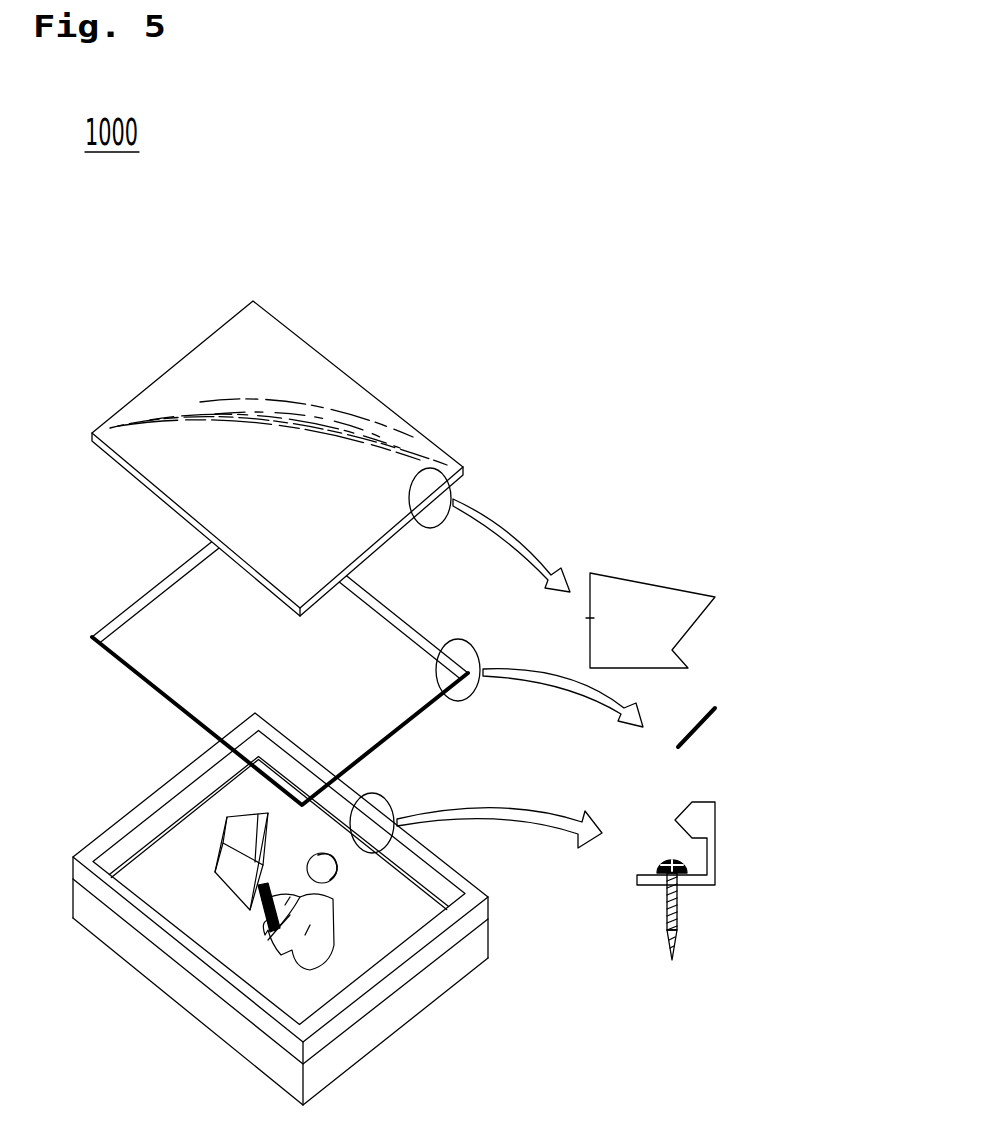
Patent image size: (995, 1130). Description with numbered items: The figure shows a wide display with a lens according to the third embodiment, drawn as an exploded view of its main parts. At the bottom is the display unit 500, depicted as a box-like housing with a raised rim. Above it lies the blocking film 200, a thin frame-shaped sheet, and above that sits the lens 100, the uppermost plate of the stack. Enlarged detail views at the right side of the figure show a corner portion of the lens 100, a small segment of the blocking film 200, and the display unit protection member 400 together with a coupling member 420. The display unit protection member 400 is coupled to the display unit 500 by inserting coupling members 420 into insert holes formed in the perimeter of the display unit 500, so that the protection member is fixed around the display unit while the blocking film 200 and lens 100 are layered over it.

The lens 100 is at (322, 377).
The blocking film 200 is at (108, 624).
The display unit protection member 400 is at (715, 885).
The coupling member 420 is at (661, 858).
The display unit 500 is at (487, 933).